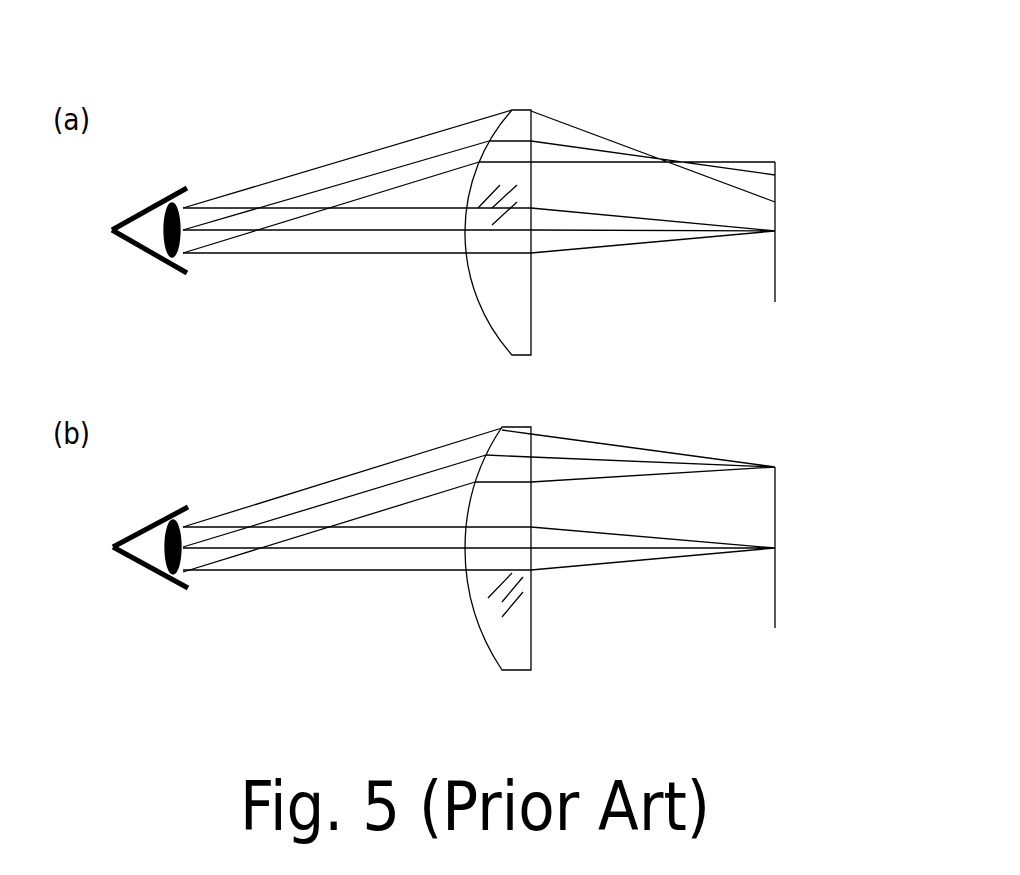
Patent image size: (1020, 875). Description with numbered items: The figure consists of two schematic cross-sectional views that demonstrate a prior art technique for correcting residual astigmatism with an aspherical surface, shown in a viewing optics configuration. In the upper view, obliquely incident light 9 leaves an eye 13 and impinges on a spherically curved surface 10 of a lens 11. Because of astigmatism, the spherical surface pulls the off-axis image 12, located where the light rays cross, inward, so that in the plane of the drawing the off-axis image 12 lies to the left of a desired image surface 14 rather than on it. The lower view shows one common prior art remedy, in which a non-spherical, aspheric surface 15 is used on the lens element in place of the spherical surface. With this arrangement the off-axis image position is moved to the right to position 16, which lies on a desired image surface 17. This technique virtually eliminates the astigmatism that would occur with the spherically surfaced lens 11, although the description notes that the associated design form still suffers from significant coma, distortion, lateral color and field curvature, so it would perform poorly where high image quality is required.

The obliquely incident light 9 is at (363, 168).
The spherically curved surface 10 is at (493, 123).
The lens 11 is at (500, 288).
The off-axis image 12 is at (658, 150).
The eye 13 is at (175, 272).
The desired image surface 14 is at (778, 213).
The aspheric surface 15 is at (480, 627).
The off-axis image position 16 is at (773, 463).
The desired image surface 17 is at (777, 505).